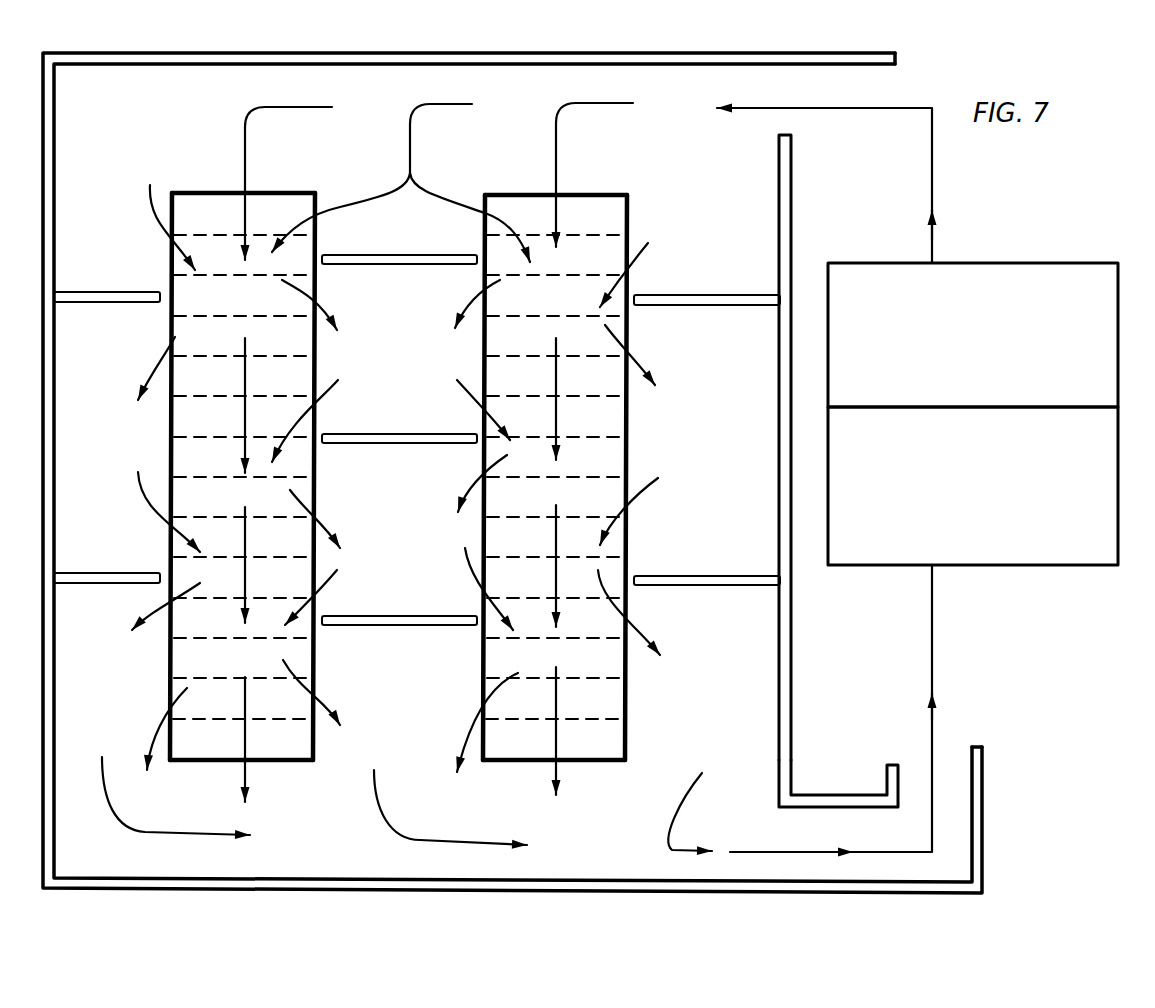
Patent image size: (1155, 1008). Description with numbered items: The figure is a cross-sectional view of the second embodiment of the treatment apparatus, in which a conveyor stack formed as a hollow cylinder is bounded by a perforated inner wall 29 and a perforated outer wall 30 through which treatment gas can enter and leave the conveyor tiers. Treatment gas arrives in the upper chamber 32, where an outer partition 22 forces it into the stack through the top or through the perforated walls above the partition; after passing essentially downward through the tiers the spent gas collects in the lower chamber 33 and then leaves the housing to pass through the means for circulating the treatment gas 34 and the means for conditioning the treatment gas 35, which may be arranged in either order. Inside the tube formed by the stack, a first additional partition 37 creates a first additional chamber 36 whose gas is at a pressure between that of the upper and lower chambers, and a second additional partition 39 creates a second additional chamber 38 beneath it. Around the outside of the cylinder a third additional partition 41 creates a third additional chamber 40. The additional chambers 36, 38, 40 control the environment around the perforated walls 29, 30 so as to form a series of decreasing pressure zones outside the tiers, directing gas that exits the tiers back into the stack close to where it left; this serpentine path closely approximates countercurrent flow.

The outer partition 22 is at (108, 292).
The perforated inner wall 29 is at (482, 680).
The perforated outer wall 30 is at (172, 258).
The upper chamber 32 is at (760, 216).
The lower chamber 33 is at (745, 750).
The means for circulating the treatment gas 34 is at (975, 505).
The means for conditioning the treatment gas 35 is at (990, 349).
The first additional chamber 36 is at (415, 375).
The first additional partition 37 is at (410, 255).
The second additional chamber 38 is at (415, 543).
The second additional partition 39 is at (405, 625).
The third additional chamber 40 is at (125, 452).
The third additional partition 41 is at (103, 584).